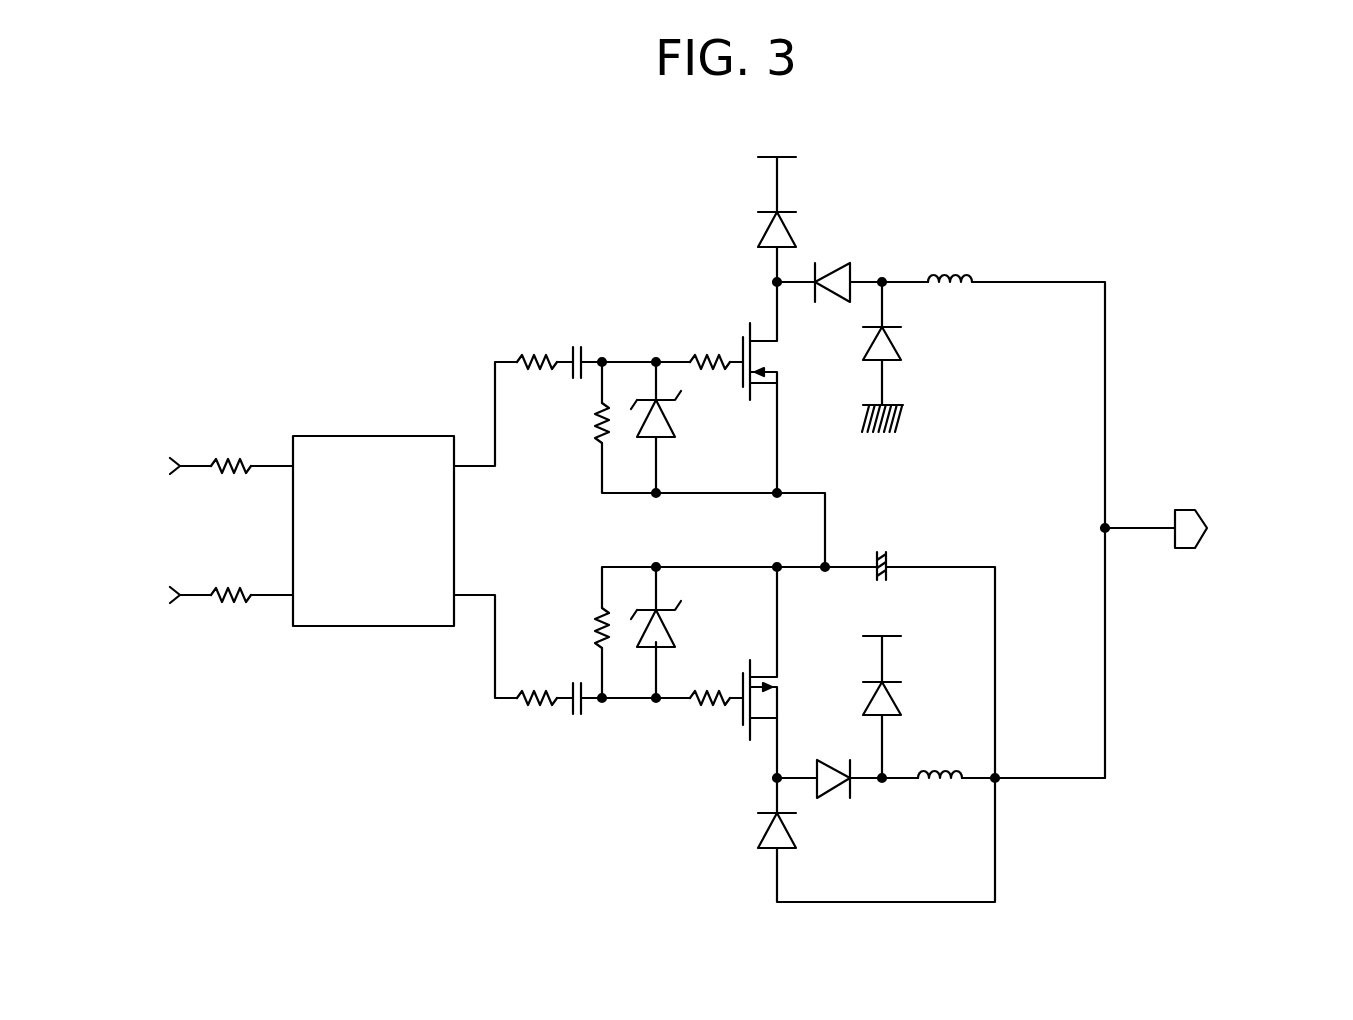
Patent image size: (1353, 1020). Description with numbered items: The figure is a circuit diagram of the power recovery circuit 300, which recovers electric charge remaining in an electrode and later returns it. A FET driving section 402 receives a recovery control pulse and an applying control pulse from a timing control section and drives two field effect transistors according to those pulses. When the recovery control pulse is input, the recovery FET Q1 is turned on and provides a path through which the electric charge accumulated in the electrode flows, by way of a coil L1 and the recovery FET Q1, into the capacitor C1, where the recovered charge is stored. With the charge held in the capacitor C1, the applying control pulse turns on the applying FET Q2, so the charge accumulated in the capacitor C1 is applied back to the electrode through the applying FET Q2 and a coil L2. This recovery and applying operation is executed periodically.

The power recovery circuit 300 is at (462, 218).
The FET driving section 402 is at (371, 436).
The recovery FET Q1 is at (774, 370).
The applying FET Q2 is at (774, 672).
The coil L1 is at (950, 263).
The coil L2 is at (940, 758).
The capacitor C1 is at (881, 550).